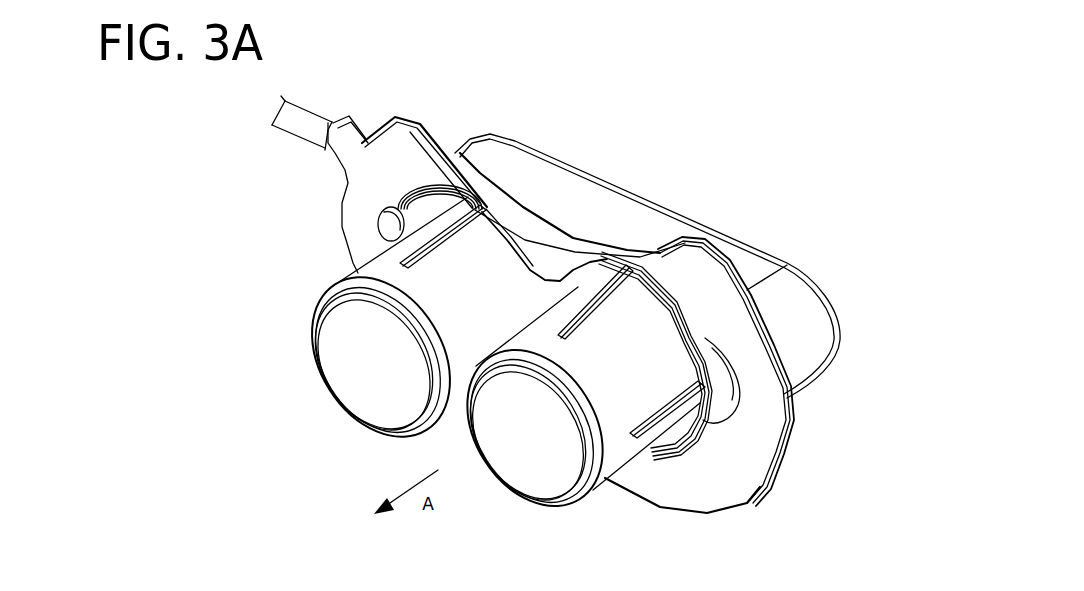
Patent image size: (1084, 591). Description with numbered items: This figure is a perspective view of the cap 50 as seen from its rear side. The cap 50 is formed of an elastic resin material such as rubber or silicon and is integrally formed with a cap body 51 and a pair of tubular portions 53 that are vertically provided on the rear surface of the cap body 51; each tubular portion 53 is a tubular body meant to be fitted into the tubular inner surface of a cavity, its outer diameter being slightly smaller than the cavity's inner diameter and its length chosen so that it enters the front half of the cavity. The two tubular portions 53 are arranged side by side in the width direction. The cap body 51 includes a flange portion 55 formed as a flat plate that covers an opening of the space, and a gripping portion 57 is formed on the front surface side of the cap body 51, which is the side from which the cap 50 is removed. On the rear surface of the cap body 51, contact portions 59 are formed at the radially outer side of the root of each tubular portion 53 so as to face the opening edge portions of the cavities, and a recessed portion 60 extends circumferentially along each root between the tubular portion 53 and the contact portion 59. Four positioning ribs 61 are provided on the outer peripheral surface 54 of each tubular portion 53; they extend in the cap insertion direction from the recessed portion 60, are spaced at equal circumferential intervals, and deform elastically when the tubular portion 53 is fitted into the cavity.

The cap 50 is at (749, 181).
The cap body 51 is at (561, 186).
The tubular portion 53 is at (378, 264).
The outer peripheral surface 54 is at (430, 289).
The flange portion 55 is at (757, 450).
The gripping portion 57 is at (633, 225).
The contact portion 59 is at (406, 203).
The recessed portion 60 is at (380, 222).
The positioning rib 61 is at (432, 245).